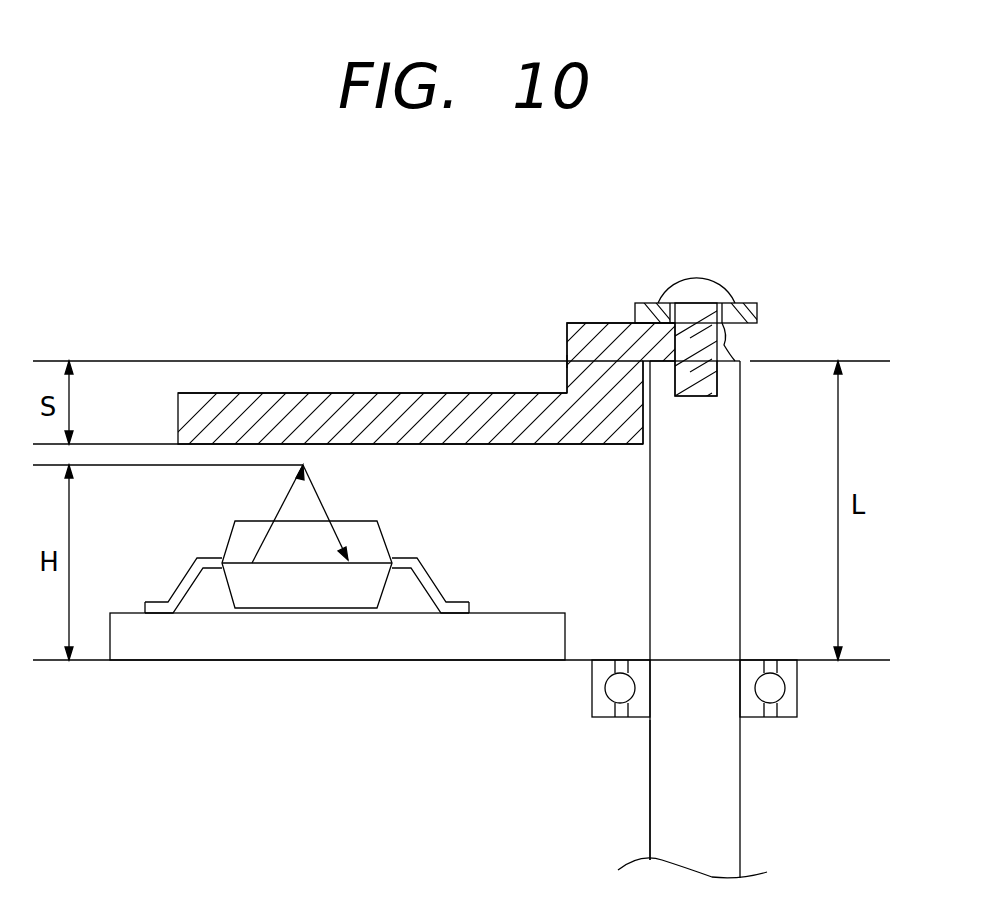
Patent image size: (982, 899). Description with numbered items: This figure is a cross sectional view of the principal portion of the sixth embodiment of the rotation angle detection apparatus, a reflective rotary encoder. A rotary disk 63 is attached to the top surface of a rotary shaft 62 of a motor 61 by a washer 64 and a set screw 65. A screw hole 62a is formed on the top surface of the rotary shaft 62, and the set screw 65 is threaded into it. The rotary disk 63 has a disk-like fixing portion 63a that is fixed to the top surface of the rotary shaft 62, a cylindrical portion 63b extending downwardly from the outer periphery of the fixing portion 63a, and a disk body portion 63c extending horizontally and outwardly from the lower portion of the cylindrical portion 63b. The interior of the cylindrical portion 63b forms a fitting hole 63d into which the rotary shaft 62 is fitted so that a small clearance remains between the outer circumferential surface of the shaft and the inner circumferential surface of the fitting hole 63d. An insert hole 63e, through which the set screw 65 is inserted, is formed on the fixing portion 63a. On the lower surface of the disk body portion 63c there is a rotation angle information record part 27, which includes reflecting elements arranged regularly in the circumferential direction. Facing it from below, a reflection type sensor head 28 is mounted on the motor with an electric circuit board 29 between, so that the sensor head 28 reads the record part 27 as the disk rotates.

The rotation angle information record part 27 is at (300, 446).
The reflection type sensor head 28 is at (227, 538).
The electric circuit board 29 is at (298, 645).
The motor 61 is at (636, 797).
The rotary shaft 62 is at (655, 585).
The screw hole 62a is at (717, 390).
The rotary disk 63 is at (216, 378).
The fixing portion 63a is at (600, 333).
The cylindrical portion 63b is at (566, 362).
The disk body portion 63c is at (345, 393).
The fitting hole 63d is at (647, 418).
The insert hole 63e is at (686, 337).
The washer 64 is at (757, 313).
The set screw 65 is at (722, 282).